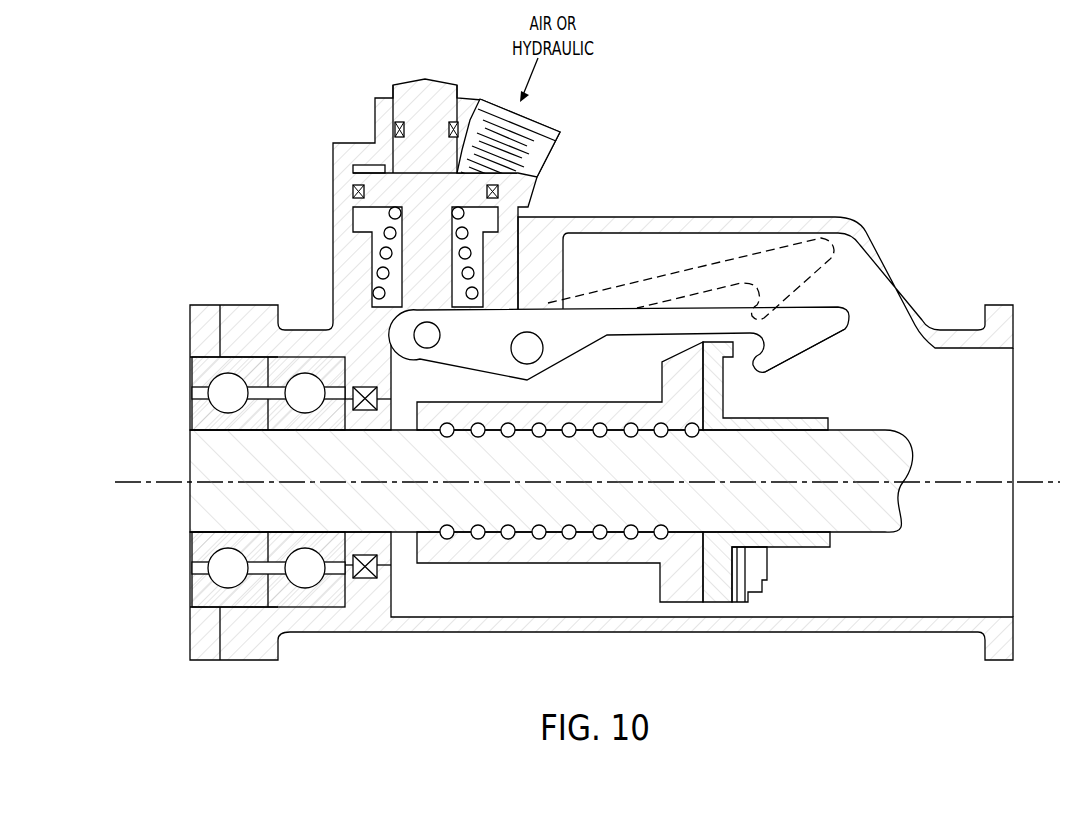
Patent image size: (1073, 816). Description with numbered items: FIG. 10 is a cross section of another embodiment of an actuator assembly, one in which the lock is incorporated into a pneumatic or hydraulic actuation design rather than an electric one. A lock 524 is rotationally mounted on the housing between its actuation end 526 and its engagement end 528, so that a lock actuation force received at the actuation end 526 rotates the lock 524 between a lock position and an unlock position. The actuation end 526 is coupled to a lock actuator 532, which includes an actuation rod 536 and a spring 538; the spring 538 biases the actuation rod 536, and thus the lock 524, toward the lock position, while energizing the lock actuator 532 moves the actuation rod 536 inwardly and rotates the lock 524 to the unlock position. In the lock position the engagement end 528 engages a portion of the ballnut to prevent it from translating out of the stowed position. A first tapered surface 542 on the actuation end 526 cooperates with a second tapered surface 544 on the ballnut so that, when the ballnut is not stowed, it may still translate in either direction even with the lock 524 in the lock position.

The lock actuator 532 is at (310, 186).
The actuation rod 536 is at (412, 263).
The spring 538 is at (472, 232).
The lock 524 is at (670, 310).
The actuation end 526 is at (433, 349).
The engagement end 528 is at (850, 315).
The first tapered surface 542 is at (788, 358).
The second tapered surface 544 is at (675, 358).